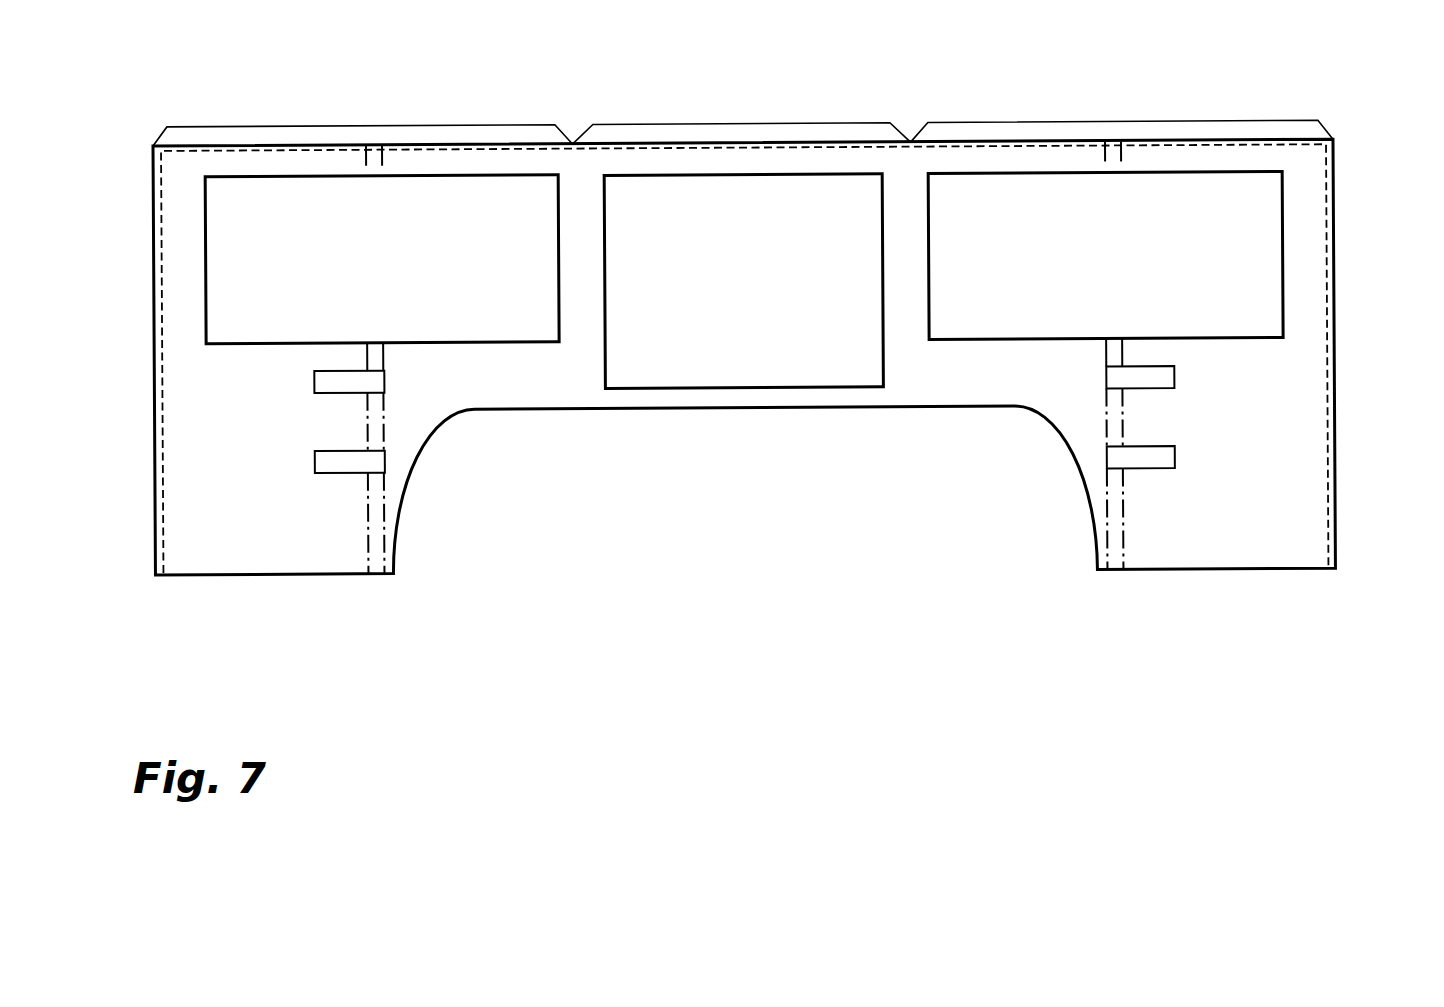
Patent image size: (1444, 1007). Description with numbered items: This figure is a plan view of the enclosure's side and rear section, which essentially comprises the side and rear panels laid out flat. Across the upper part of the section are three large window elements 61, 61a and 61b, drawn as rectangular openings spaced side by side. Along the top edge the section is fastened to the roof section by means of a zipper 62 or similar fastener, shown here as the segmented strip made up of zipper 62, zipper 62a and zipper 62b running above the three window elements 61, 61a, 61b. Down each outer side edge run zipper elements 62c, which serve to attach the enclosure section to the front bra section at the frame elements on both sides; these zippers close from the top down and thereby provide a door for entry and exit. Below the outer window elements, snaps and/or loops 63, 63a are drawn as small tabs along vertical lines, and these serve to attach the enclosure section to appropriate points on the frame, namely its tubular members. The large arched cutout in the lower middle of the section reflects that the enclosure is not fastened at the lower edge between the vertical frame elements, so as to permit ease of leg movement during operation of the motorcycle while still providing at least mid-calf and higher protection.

The window element 61 is at (262, 198).
The window element 61a is at (670, 193).
The window element 61b is at (1000, 193).
The zipper 62 is at (438, 125).
The zipper 62a is at (808, 123).
The zipper 62b is at (1138, 123).
The zipper element 62c is at (152, 362).
The snaps and/or loops 63 is at (375, 463).
The snaps and/or loops 63a is at (1112, 455).